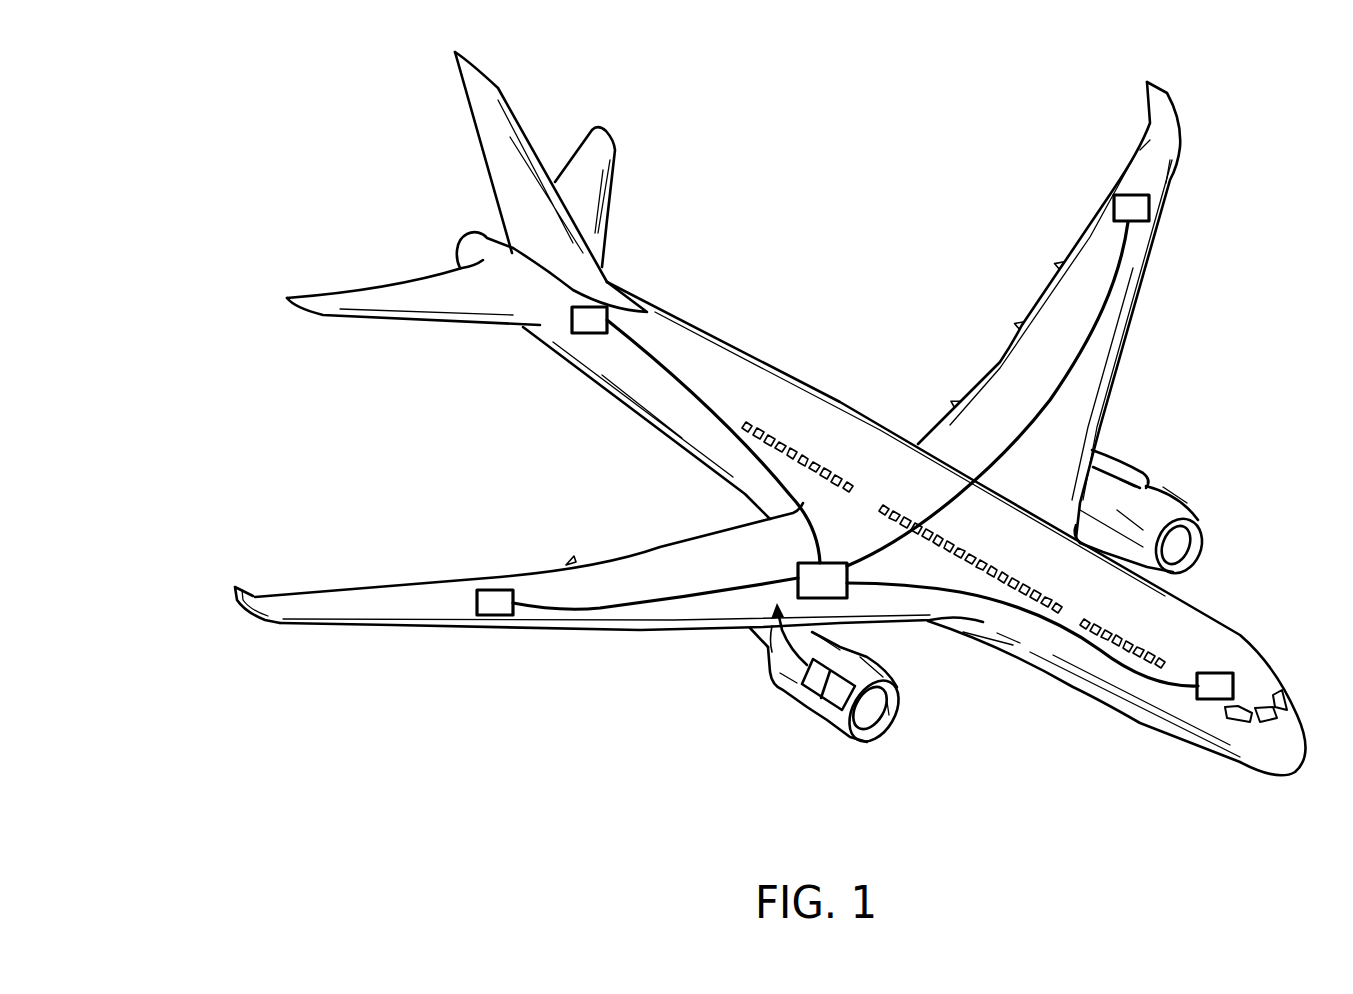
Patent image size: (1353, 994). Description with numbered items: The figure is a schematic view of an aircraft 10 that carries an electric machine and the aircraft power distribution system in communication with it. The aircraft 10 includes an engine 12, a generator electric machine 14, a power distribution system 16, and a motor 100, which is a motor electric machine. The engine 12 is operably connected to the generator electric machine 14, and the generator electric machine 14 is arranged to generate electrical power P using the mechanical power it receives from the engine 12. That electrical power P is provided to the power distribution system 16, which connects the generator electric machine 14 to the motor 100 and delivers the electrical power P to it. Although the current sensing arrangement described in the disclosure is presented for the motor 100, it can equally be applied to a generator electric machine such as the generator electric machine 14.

The aircraft 10 is at (475, 765).
The engine 12 is at (828, 700).
The generator electric machine 14 is at (802, 687).
The power distribution system 16 is at (713, 410).
The motor 100 is at (590, 317).
The electrical power P is at (769, 639).